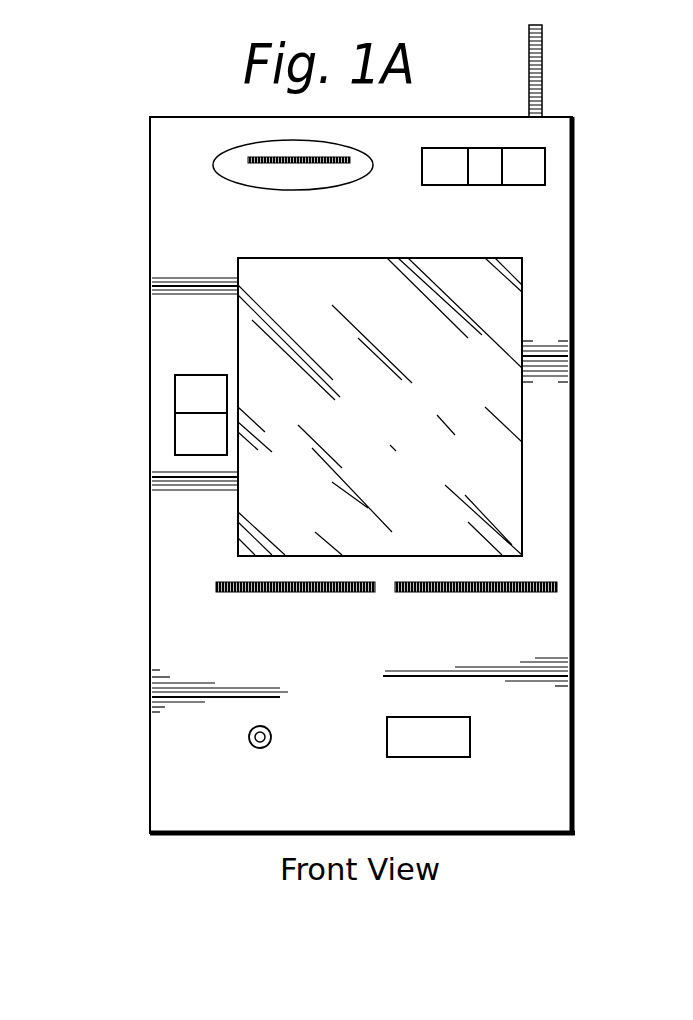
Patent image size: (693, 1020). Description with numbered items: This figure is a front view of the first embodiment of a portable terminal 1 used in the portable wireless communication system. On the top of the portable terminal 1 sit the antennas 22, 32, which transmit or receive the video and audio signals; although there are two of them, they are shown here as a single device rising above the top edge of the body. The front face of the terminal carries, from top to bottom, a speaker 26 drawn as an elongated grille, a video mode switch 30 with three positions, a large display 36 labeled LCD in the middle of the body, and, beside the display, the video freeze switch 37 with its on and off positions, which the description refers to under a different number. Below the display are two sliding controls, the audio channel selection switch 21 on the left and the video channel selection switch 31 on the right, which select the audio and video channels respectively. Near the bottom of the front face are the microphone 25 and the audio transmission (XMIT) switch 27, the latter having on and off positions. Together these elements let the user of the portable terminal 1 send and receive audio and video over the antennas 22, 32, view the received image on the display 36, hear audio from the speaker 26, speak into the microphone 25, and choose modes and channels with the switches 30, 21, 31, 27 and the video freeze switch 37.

The portable terminal 1 is at (575, 303).
The audio channel selection switch 21 is at (232, 581).
The antenna 22 is at (595, 71).
The antenna 32 is at (542, 68).
The microphone 25 is at (272, 731).
The speaker 26 is at (241, 185).
The audio transmission (XMIT) switch 27 is at (470, 736).
The video mode switch 30 is at (545, 166).
The video channel selection switch 31 is at (552, 580).
The display 36 is at (522, 441).
The video freeze switch 37 is at (198, 375).